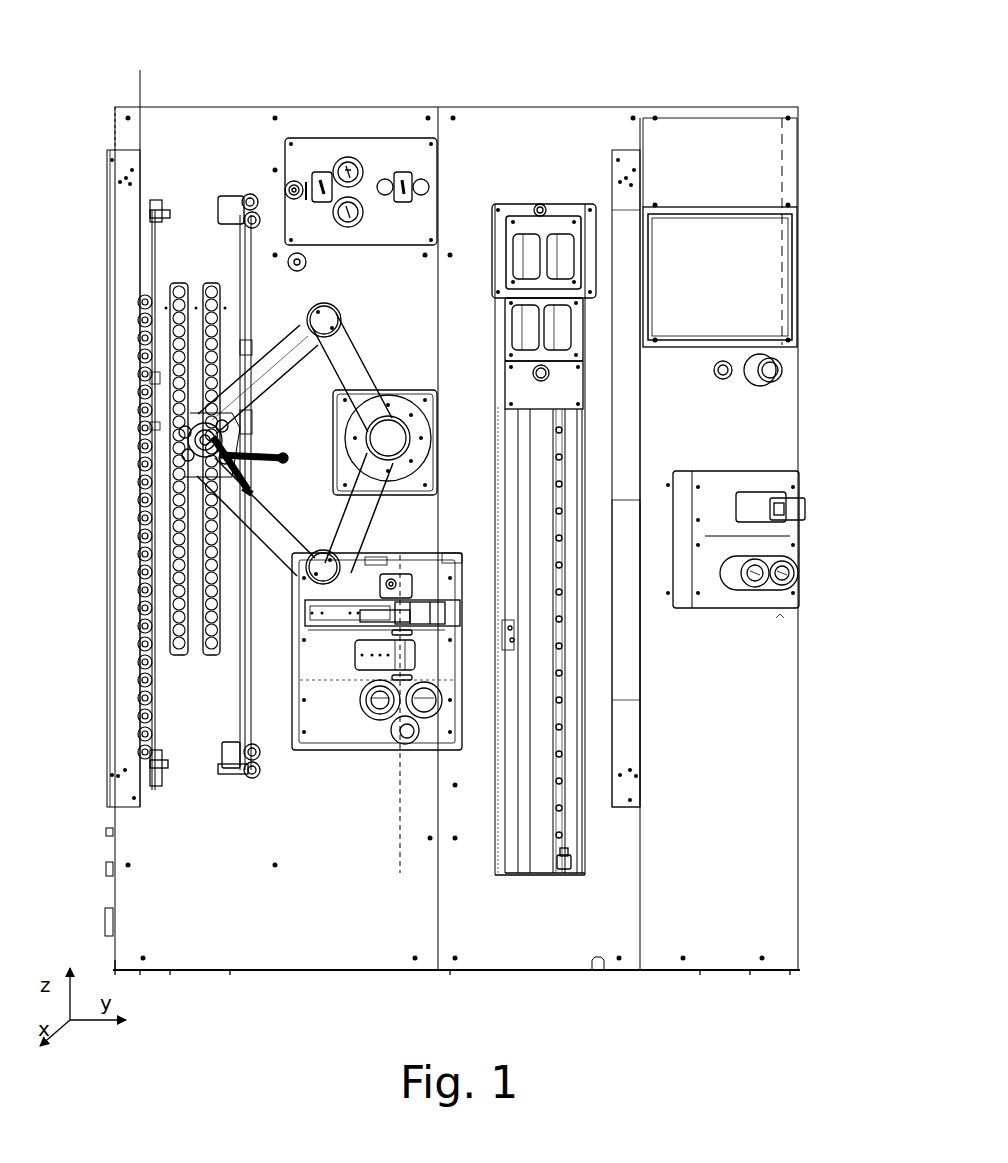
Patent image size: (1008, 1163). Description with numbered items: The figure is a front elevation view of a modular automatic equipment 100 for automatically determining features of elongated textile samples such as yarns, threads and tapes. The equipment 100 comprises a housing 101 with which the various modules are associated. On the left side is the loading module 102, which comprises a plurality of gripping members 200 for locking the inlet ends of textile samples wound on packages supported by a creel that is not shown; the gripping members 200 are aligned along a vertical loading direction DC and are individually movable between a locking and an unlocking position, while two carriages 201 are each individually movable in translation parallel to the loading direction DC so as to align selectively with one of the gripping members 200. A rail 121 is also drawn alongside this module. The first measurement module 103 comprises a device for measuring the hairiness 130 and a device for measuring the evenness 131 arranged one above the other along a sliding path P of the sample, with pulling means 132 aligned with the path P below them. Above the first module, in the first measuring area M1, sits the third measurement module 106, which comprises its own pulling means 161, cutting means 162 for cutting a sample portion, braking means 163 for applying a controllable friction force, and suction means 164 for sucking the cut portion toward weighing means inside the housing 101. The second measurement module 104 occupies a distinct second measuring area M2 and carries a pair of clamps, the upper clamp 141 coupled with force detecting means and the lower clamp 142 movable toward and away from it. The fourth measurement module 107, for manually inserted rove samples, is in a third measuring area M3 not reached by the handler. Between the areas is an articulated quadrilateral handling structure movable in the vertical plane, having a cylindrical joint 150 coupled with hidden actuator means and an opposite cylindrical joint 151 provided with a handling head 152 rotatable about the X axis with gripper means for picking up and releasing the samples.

The modular equipment 100 is at (775, 80).
The housing 101 is at (788, 972).
The loading module 102 is at (185, 192).
The first measurement module 103 is at (320, 757).
The second measurement module 104 is at (555, 895).
The third measurement module 106 is at (350, 134).
The fourth measurement module 107 is at (808, 468).
The mounting rail 121 is at (146, 213).
The device for measuring the hairiness 130 is at (300, 606).
The device for measuring the evenness 131 is at (352, 658).
The pulling means 132 is at (350, 700).
The upper clamp 141 is at (600, 230).
The lower clamp 142 is at (590, 330).
The cylindrical joint 150 is at (395, 440).
The cylindrical joint 151 is at (185, 446).
The handling head 152 is at (188, 462).
The pulling means 161 is at (358, 160).
The cutting means 162 is at (302, 180).
The braking means 163 is at (410, 170).
The suction means 164 is at (320, 166).
The gripping members 200 is at (176, 302).
The carriages 201 is at (145, 780).
The loading direction DC is at (140, 88).
The first measuring area M1 is at (370, 293).
The second measuring area M2 is at (594, 654).
The third measuring area M3 is at (755, 847).
The sliding path P is at (392, 836).